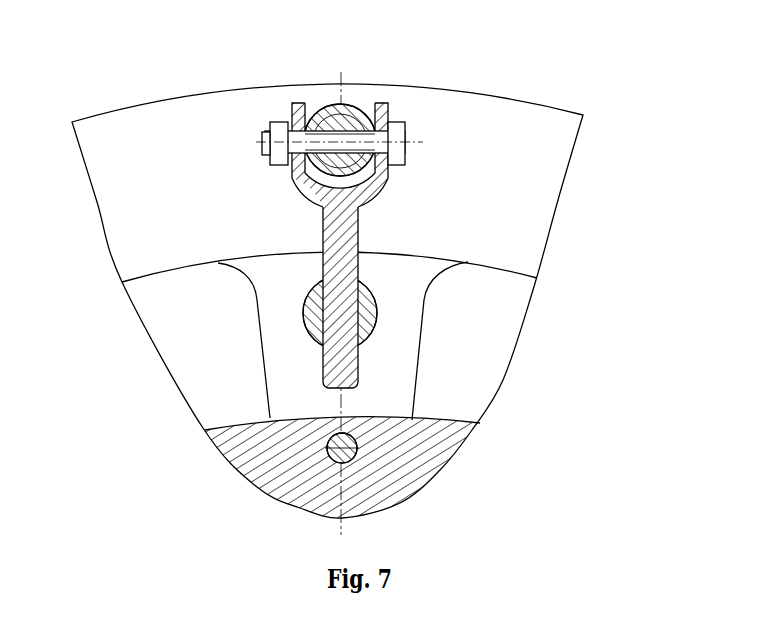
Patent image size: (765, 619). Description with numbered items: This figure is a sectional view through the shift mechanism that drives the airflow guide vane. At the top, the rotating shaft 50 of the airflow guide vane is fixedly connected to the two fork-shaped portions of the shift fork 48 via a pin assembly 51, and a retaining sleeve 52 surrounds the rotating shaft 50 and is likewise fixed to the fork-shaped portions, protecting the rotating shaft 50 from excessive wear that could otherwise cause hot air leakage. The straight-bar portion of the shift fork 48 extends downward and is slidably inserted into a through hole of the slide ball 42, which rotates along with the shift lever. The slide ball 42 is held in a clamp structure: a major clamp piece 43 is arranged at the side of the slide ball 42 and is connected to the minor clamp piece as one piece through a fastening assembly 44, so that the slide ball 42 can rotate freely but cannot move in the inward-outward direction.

The slide ball 42 is at (372, 304).
The major clamp piece 43 is at (457, 382).
The fastening assembly 44 is at (357, 450).
The shift fork 48 is at (350, 208).
The rotating shaft 50 is at (395, 45).
The pin assembly 51 is at (340, 45).
The retaining sleeve 52 is at (447, 45).